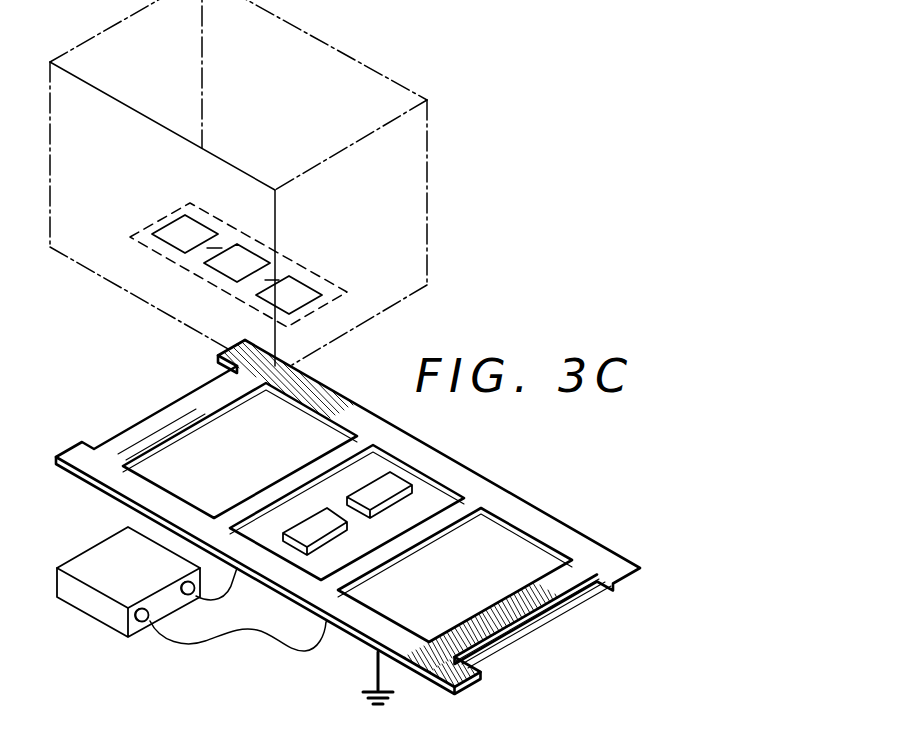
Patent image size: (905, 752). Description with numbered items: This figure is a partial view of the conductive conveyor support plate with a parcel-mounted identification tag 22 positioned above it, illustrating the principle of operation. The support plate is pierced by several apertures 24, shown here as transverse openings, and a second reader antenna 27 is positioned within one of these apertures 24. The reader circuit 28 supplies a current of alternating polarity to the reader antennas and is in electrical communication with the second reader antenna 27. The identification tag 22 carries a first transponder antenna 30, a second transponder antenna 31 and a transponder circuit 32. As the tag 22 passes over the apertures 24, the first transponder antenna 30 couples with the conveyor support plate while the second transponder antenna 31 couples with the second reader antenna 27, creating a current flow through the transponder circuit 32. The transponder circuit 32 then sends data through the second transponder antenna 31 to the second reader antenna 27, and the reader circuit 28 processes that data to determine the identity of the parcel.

The identification tag 22 is at (427, 228).
The apertures 24 is at (145, 465).
The second reader antenna 27 is at (328, 505).
The reader circuit 28 is at (95, 555).
The first transponder antenna 30 is at (192, 227).
The second transponder antenna 31 is at (303, 298).
The transponder circuit 32 is at (250, 258).